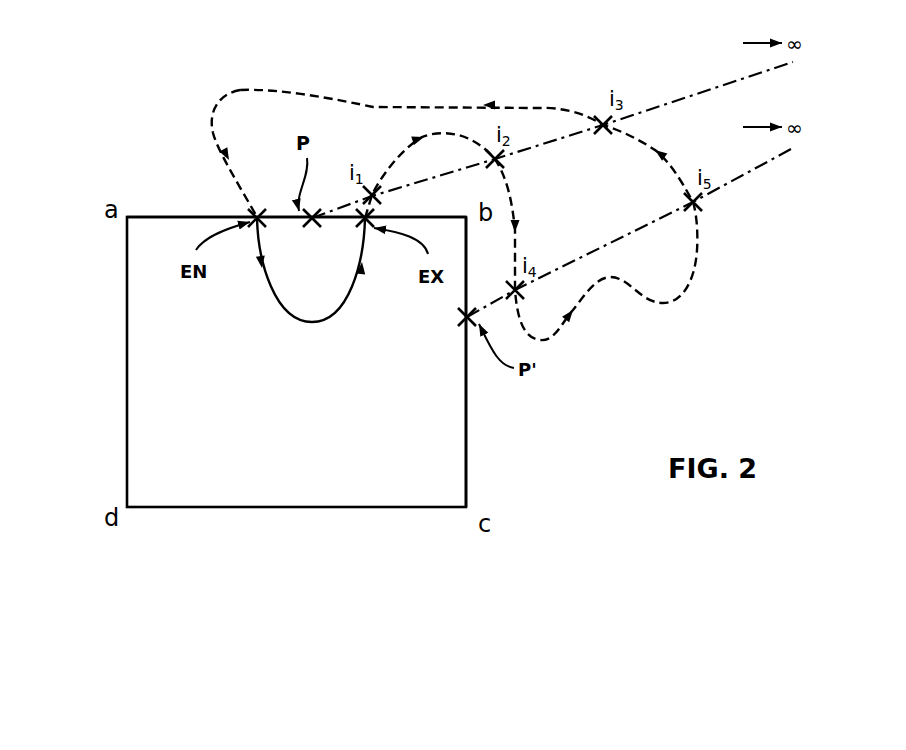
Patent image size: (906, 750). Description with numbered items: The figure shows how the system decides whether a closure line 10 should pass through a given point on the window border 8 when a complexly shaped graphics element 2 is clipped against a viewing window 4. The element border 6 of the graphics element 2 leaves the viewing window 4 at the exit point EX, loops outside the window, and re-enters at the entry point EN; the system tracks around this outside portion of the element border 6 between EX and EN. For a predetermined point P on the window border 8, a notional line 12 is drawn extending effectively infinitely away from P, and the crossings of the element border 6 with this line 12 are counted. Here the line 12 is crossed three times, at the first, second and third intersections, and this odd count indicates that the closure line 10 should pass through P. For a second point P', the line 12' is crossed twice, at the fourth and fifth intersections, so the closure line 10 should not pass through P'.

The graphics element 2 is at (371, 101).
The viewing window 4 is at (106, 318).
The element border 6 is at (235, 89).
The window border 8 is at (470, 432).
The closure line 10 is at (273, 211).
The notional line 12 is at (552, 111).
The line 12' is at (630, 232).